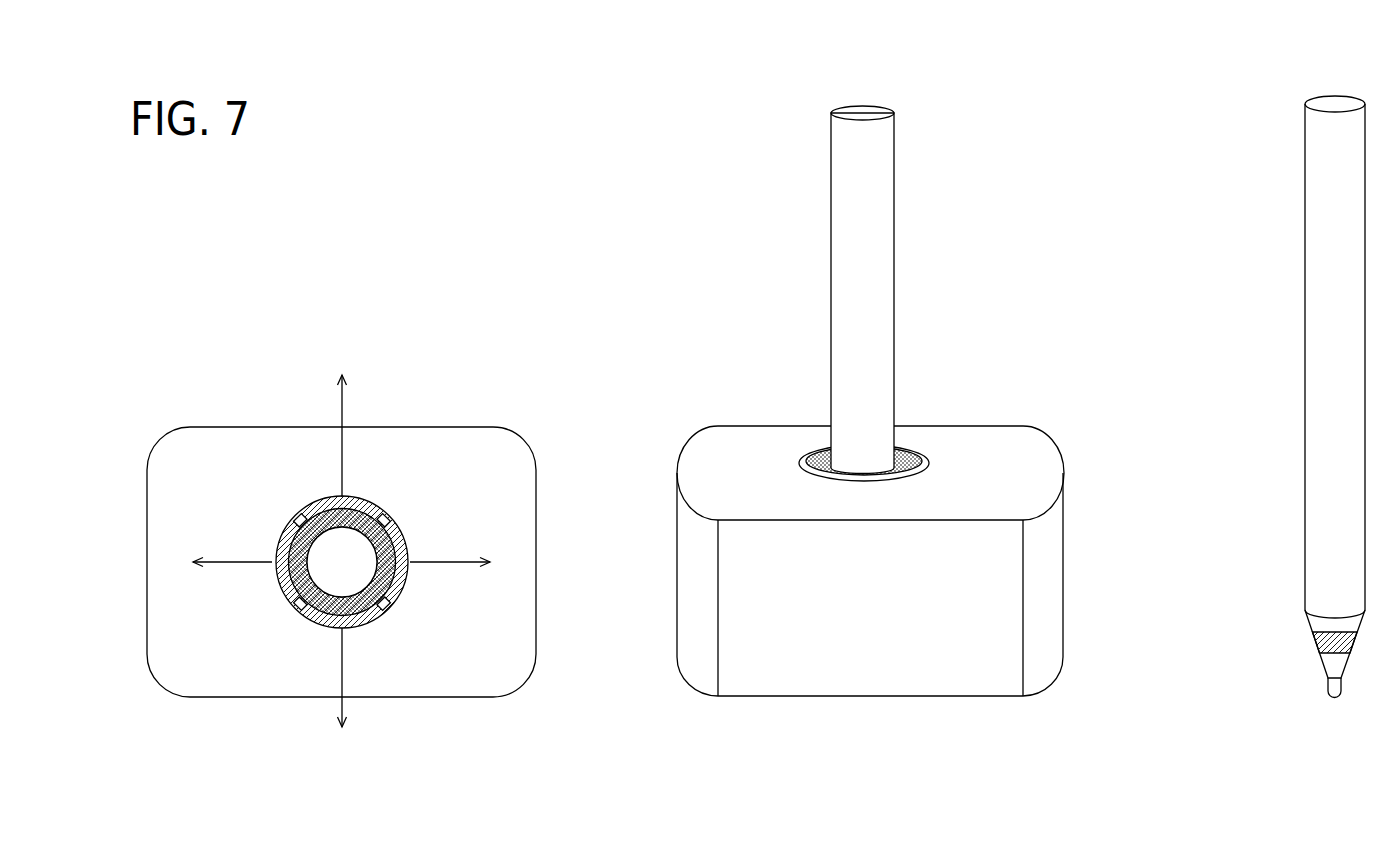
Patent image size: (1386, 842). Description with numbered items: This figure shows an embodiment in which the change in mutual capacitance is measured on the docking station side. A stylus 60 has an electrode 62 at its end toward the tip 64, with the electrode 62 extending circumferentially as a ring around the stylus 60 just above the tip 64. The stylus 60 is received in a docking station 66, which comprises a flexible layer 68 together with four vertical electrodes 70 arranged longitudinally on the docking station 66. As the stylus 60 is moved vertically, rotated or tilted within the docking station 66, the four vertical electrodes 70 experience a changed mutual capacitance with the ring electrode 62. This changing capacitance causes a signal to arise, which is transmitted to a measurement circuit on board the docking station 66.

The stylus 60 is at (343, 562).
The electrode 62 is at (1313, 642).
The tip 64 is at (1333, 695).
The docking station 66 is at (664, 419).
The flexible layer 68 is at (335, 523).
The vertical electrodes 70 is at (385, 606).